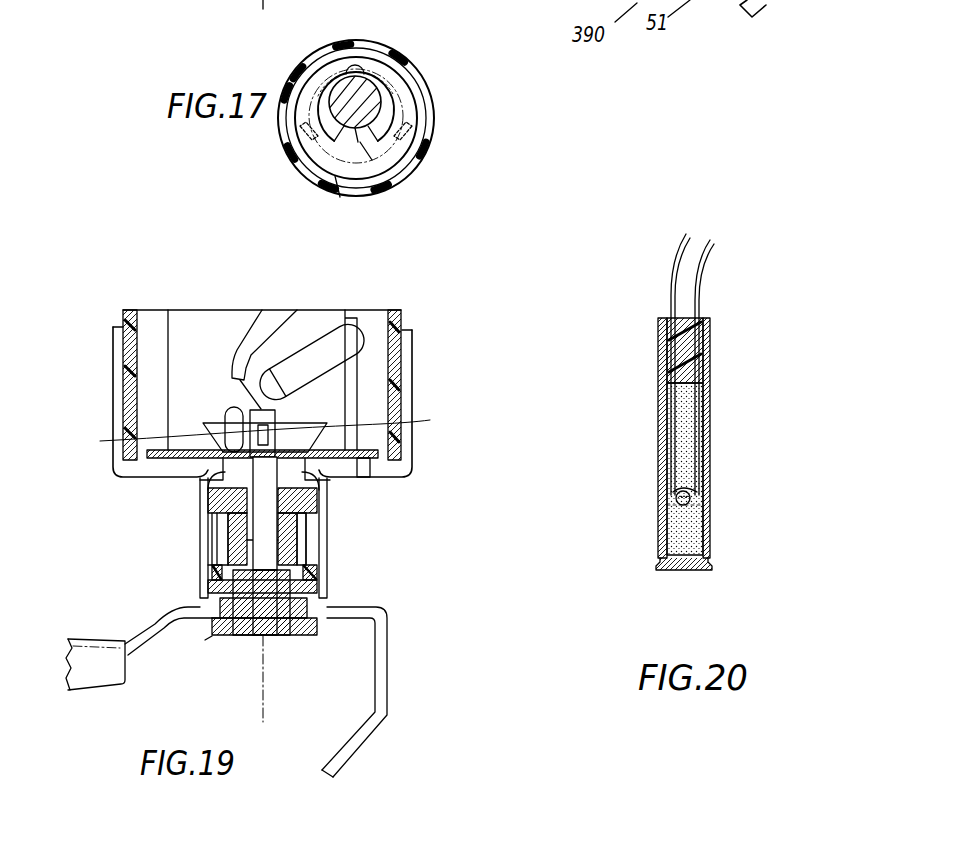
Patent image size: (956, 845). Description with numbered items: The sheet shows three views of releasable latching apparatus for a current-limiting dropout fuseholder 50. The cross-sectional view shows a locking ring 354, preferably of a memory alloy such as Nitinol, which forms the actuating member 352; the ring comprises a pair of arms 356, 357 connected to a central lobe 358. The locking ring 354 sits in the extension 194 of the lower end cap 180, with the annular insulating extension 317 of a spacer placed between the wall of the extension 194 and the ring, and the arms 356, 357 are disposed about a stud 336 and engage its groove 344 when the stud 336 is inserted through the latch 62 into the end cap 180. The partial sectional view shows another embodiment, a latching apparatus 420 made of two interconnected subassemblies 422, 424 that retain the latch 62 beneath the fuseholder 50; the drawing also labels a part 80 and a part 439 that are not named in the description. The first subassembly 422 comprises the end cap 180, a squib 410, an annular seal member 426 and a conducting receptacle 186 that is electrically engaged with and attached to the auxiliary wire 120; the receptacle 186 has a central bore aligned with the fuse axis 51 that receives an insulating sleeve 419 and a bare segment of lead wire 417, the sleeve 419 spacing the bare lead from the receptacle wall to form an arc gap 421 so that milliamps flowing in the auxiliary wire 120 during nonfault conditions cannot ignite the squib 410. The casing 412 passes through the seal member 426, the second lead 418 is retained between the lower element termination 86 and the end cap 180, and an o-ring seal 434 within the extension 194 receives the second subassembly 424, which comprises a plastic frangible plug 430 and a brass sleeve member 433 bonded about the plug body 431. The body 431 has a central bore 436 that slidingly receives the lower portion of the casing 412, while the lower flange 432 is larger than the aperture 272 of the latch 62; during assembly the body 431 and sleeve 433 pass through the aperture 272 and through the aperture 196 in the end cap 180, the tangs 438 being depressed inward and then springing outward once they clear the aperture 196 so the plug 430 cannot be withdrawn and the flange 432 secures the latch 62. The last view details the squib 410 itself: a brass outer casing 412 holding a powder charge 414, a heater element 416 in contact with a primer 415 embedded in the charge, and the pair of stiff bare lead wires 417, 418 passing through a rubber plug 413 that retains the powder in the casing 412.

In FIG. 17, the end cap extension 194 is at (312, 62).
In FIG. 19, the end cap extension 194 is at (208, 538).
In FIG. 17, the annular insulating extension 317 is at (340, 197).
In FIG. 17, the stud 336 is at (373, 107).
In FIG. 17, the groove 344 is at (358, 140).
In FIG. 17, the actuating member 352 is at (393, 142).
In FIG. 17, the locking ring 354 is at (383, 88).
In FIG. 17, the arm 356 is at (307, 125).
In FIG. 17, the arm 357 is at (407, 123).
In FIG. 17, the central lobe 358 is at (360, 62).
In FIG. 19, the current-limiting dropout fuseholder 50 is at (422, 316).
In FIG. 19, the fuse axis 51 is at (266, 712).
In FIG. 19, the latch 62 is at (87, 672).
In FIG. 19, the actuating cylinder 80 is at (363, 335).
In FIG. 19, the lower element termination 86 is at (380, 453).
In FIG. 19, the auxiliary wire 120 is at (282, 315).
In FIG. 19, the lower end cap 180 is at (410, 352).
In FIG. 19, the conducting receptacle 186 is at (300, 407).
In FIG. 19, the aperture 196 is at (227, 602).
In FIG. 19, the aperture 272 is at (320, 622).
In FIG. 19, the squib 410 is at (313, 532).
In FIG. 20, the squib 410 is at (715, 352).
In FIG. 19, the outer casing 412 is at (218, 523).
In FIG. 20, the outer casing 412 is at (707, 417).
In FIG. 20, the rubber plug 413 is at (690, 328).
In FIG. 20, the powder charge 414 is at (695, 528).
In FIG. 20, the primer 415 is at (688, 482).
In FIG. 20, the heater element 416 is at (688, 500).
In FIG. 19, the lead wire 417 is at (272, 427).
In FIG. 20, the lead wire 417 is at (672, 263).
In FIG. 19, the lead wire 418 is at (342, 478).
In FIG. 20, the lead wire 418 is at (700, 268).
In FIG. 19, the insulating sleeve 419 is at (212, 491).
In FIG. 19, the latching apparatus 420 is at (430, 608).
In FIG. 19, the arc gap 421 is at (203, 437).
In FIG. 19, the first subassembly 422 is at (160, 487).
In FIG. 19, the second subassembly 424 is at (208, 642).
In FIG. 19, the annular seal member 426 is at (327, 493).
In FIG. 19, the frangible plug 430 is at (317, 575).
In FIG. 19, the plug body 431 is at (260, 597).
In FIG. 19, the lower flange 432 is at (308, 628).
In FIG. 19, the sleeve member 433 is at (310, 562).
In FIG. 19, the o-ring seal 434 is at (208, 567).
In FIG. 19, the central bore 436 is at (320, 550).
In FIG. 19, the tang 438 is at (215, 577).
In FIG. 19, the outer wall 439 is at (327, 510).